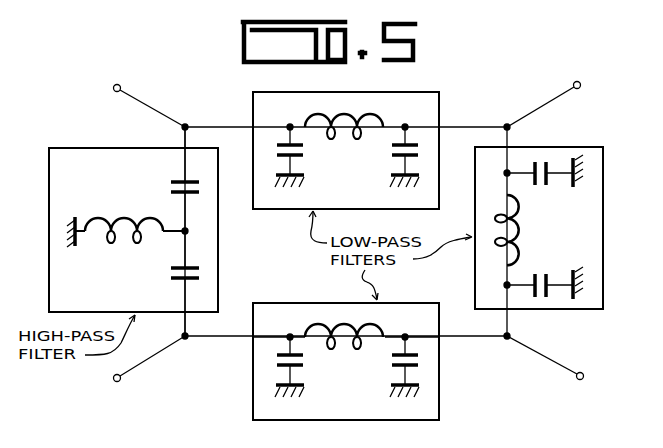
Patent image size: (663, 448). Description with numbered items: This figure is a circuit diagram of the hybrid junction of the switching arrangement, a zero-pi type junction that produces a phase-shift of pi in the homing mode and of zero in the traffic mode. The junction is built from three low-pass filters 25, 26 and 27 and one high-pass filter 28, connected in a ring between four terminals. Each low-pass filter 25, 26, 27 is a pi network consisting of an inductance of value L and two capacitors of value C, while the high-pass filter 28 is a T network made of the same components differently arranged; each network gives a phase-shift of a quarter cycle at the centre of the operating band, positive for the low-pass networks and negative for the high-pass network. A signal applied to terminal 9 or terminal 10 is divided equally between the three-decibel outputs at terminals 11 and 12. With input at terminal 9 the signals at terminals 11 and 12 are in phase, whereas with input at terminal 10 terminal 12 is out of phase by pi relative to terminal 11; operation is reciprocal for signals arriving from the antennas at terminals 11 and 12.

The terminal 9 is at (575, 81).
The terminal 10 is at (121, 380).
The terminal 11 is at (577, 380).
The terminal 12 is at (125, 71).
The low-pass filter 25 is at (264, 92).
The low-pass filter 26 is at (563, 147).
The low-pass filter 27 is at (294, 303).
The high-pass filter 28 is at (100, 148).